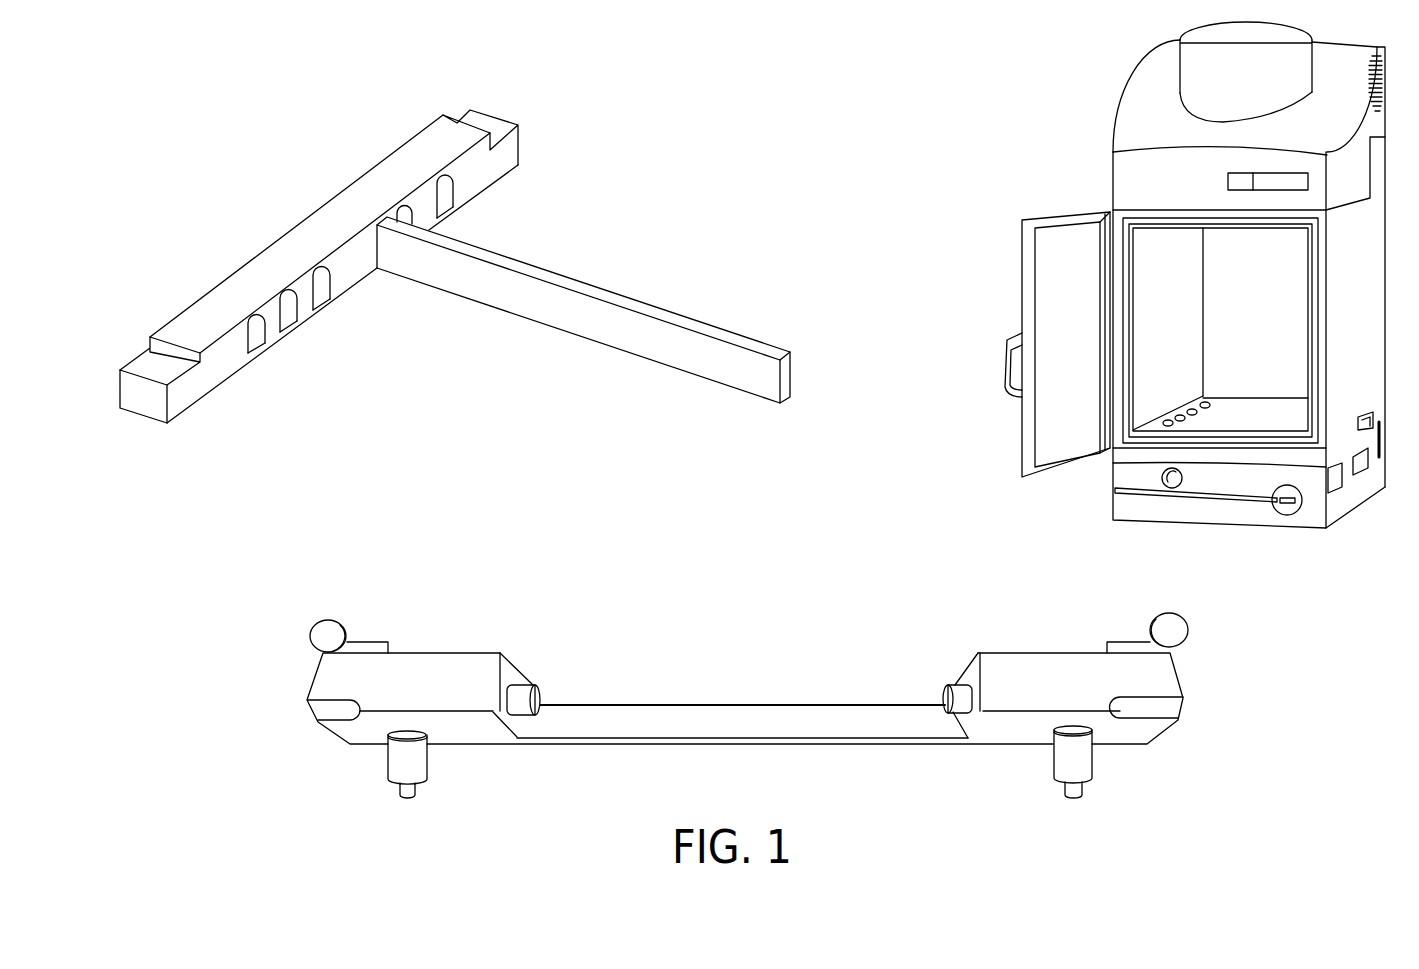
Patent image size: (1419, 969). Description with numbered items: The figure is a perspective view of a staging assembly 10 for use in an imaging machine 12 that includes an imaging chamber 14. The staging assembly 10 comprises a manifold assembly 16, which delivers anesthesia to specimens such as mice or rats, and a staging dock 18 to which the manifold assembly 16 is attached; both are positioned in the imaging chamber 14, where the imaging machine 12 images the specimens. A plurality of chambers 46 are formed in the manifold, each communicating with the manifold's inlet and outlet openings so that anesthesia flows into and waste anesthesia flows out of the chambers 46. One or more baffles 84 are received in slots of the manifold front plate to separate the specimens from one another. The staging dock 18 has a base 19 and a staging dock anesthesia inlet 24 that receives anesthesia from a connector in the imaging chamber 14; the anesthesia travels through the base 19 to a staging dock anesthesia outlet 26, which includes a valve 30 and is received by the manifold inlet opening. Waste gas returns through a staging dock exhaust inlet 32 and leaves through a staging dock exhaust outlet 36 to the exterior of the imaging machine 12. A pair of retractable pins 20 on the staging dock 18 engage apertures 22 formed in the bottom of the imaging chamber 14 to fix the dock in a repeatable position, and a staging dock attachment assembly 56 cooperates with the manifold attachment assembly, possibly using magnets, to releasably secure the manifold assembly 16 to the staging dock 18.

The staging assembly 10 is at (721, 693).
The imaging machine 12 is at (1195, 275).
The imaging chamber 14 is at (1283, 412).
The manifold assembly 16 is at (319, 266).
The staging dock 18 is at (700, 703).
The base 19 is at (775, 728).
The retractable pins 20 is at (328, 628).
The apertures 22 is at (1190, 407).
The staging dock anesthesia inlet 24 is at (535, 692).
The staging dock anesthesia outlet 26 is at (397, 761).
The valve 30 is at (428, 772).
The staging dock exhaust inlet 32 is at (1065, 787).
The staging dock exhaust outlet 36 is at (948, 697).
The chambers 46 is at (322, 298).
The staging dock attachment assembly 56 is at (278, 695).
The baffles 84 is at (628, 300).